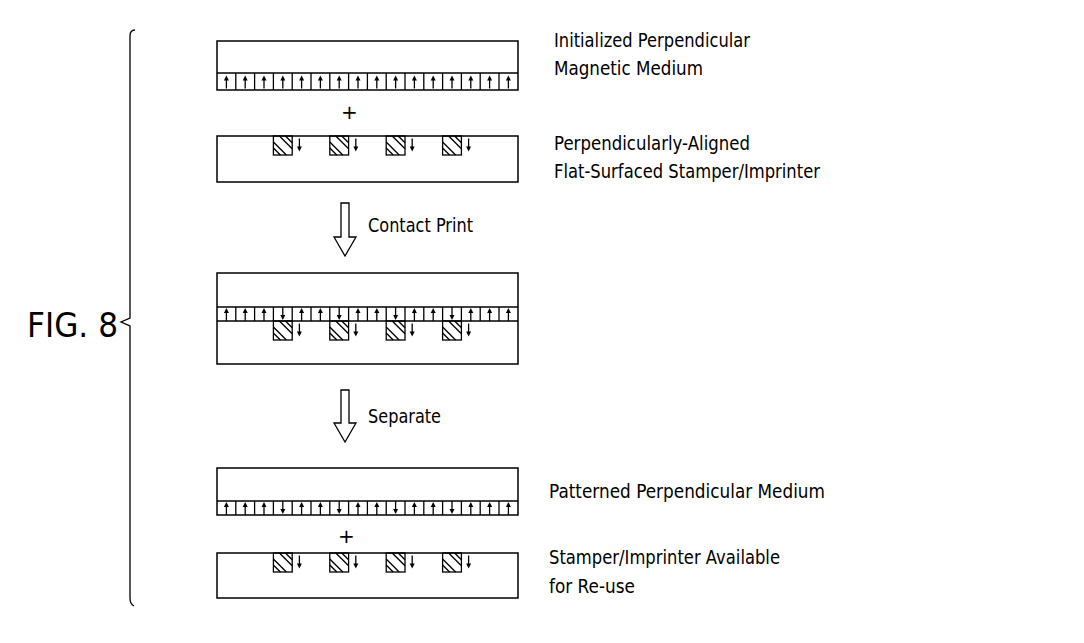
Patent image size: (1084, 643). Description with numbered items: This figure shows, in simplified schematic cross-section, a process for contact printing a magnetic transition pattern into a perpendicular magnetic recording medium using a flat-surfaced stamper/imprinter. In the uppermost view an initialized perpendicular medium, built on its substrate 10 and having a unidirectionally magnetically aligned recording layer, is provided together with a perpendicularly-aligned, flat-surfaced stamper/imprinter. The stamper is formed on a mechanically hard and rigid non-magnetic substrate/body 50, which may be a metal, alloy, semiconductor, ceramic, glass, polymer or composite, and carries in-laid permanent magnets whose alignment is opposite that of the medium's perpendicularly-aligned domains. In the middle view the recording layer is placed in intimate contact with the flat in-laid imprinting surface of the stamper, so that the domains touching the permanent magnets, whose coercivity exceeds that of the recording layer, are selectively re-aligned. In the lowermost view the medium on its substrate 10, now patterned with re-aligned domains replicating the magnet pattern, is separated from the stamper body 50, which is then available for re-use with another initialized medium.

The substrate 10 is at (378, 67).
The non-magnetic substrate/body 50 is at (385, 177).